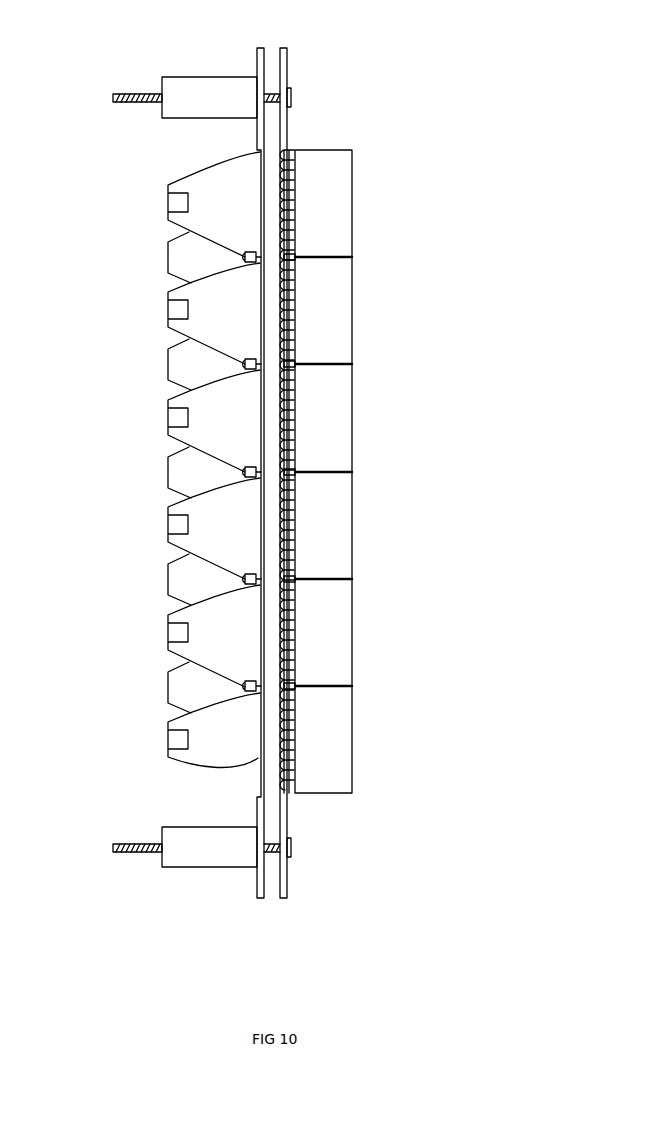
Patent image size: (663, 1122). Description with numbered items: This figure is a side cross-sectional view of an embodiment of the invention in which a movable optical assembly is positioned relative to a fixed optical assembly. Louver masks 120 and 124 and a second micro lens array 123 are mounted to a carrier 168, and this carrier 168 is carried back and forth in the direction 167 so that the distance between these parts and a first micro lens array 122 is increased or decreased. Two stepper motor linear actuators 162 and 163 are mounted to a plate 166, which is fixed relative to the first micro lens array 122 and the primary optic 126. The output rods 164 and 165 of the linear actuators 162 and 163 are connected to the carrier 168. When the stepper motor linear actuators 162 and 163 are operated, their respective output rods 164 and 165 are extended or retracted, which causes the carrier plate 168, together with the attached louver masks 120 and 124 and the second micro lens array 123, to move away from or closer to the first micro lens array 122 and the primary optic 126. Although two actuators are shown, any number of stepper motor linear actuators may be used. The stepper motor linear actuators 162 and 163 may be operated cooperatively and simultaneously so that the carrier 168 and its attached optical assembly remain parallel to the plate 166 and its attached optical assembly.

The louver mask 120 is at (293, 423).
The first micro lens array 122 is at (258, 287).
The second micro lens array 123 is at (283, 525).
The louver mask 124 is at (337, 223).
The primary optic 126 is at (193, 442).
The stepper motor linear actuator 162 is at (183, 112).
The stepper motor linear actuator 163 is at (202, 862).
The output rod 164 is at (113, 103).
The output rod 165 is at (135, 852).
The plate 166 is at (262, 72).
The direction 167 is at (323, 32).
The carrier 168 is at (285, 113).